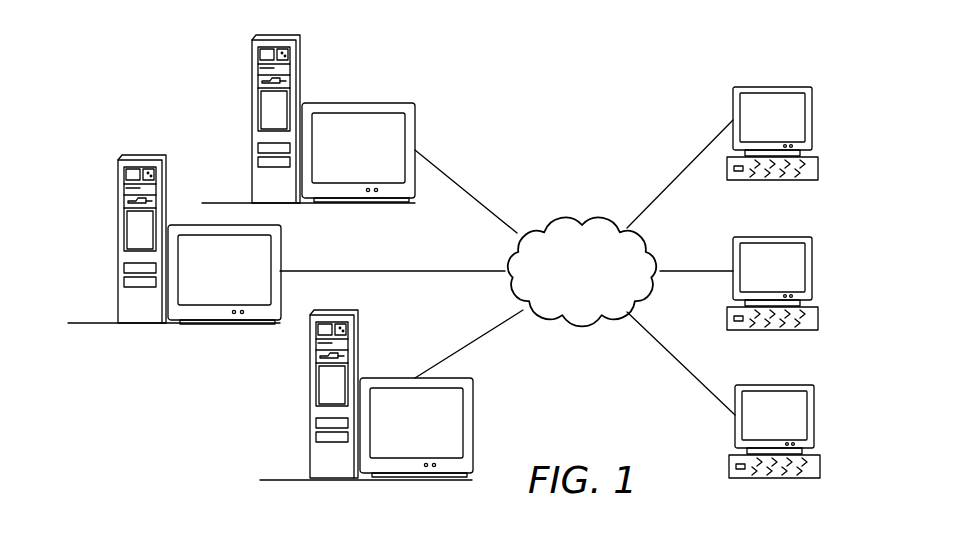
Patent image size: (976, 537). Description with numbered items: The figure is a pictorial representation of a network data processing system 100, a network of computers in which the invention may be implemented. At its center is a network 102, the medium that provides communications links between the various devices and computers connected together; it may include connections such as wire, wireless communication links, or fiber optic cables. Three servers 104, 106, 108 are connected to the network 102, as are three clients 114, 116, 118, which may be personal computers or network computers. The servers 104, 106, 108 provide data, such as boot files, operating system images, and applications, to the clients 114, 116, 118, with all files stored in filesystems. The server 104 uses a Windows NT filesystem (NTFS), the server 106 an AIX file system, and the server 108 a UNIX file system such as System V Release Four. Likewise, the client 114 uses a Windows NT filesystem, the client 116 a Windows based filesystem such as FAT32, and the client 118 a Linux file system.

The network data processing system 100 is at (641, 97).
The network 102 is at (555, 218).
The server 104 is at (252, 122).
The server 106 is at (118, 244).
The server 108 is at (310, 393).
The client 114 is at (812, 118).
The client 116 is at (812, 268).
The client 118 is at (813, 418).